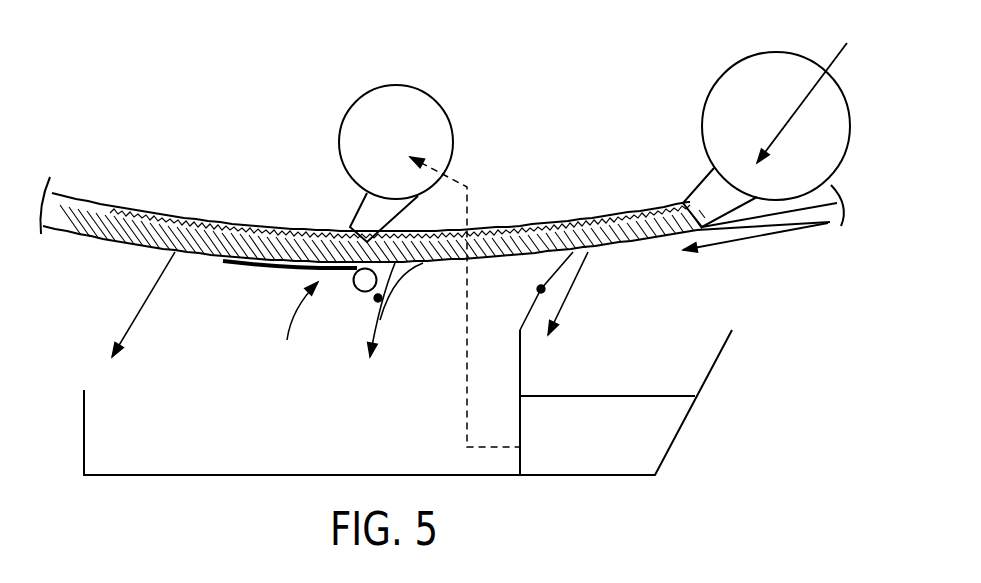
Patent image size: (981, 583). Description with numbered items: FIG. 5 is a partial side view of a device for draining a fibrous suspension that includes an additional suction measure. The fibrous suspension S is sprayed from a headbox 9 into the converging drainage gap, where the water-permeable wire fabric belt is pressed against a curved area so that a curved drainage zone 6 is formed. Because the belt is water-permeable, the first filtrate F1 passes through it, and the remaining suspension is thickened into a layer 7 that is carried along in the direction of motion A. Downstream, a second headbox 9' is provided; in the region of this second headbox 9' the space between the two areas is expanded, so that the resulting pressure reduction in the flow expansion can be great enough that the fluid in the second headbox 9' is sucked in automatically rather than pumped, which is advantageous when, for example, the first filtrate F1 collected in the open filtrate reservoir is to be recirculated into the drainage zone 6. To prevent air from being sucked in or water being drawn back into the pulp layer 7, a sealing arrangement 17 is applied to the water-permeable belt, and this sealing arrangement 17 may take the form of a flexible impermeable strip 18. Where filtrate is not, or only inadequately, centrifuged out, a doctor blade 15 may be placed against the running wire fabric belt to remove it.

The curved drainage zone 6 is at (523, 188).
The layer 7 is at (80, 233).
The headbox 9 is at (766, 125).
The second headbox 9' is at (421, 258).
The doctor blade 15 is at (378, 300).
The sealing arrangement 17 is at (296, 323).
The flexible impermeable strip 18 is at (272, 268).
The direction of motion A is at (733, 244).
The fibrous suspension S is at (838, 62).
The first filtrate F1 is at (575, 283).